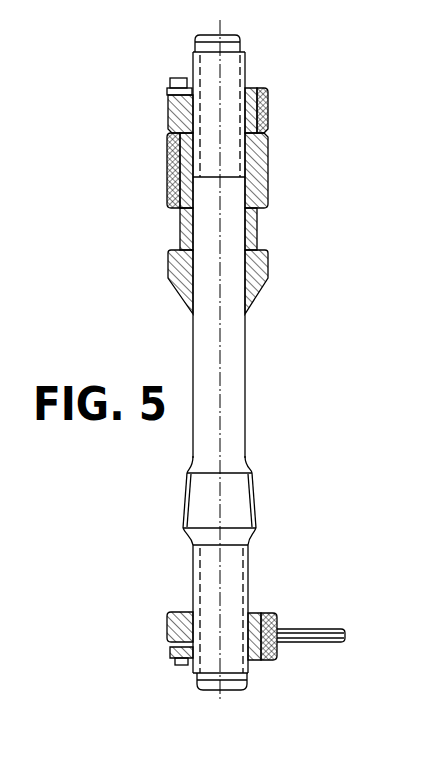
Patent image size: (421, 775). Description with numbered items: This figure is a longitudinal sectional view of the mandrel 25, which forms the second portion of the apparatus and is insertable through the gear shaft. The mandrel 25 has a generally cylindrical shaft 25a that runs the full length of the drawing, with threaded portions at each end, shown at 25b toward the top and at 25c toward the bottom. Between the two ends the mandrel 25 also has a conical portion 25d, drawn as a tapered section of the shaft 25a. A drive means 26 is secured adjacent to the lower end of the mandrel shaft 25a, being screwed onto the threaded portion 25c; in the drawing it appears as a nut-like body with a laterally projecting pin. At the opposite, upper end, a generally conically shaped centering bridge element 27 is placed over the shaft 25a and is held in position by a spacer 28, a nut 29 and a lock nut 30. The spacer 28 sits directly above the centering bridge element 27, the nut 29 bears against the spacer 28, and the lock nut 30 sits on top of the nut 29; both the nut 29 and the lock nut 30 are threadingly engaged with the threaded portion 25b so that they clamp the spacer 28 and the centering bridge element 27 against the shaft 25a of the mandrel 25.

The mandrel 25 is at (156, 165).
The cylindrical shaft 25a is at (243, 402).
The threaded portion 25b is at (246, 69).
The threaded portion 25c is at (249, 573).
The conical portion 25d is at (255, 497).
The drive means 26 is at (275, 652).
The centering bridge element 27 is at (262, 285).
The spacer 28 is at (257, 230).
The nut 29 is at (257, 168).
The lock nut 30 is at (268, 112).